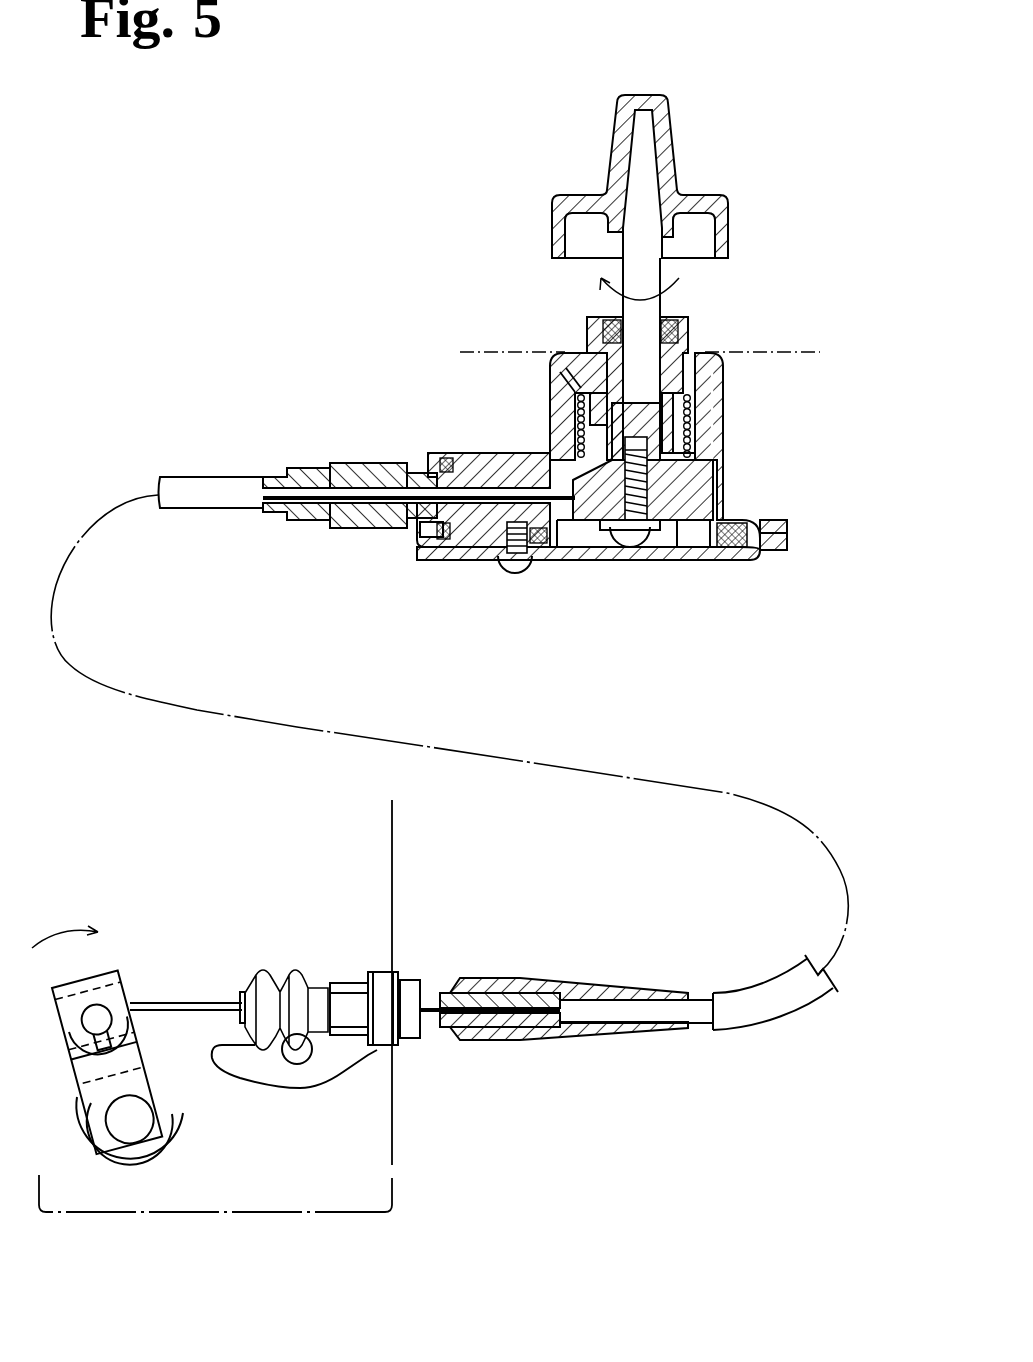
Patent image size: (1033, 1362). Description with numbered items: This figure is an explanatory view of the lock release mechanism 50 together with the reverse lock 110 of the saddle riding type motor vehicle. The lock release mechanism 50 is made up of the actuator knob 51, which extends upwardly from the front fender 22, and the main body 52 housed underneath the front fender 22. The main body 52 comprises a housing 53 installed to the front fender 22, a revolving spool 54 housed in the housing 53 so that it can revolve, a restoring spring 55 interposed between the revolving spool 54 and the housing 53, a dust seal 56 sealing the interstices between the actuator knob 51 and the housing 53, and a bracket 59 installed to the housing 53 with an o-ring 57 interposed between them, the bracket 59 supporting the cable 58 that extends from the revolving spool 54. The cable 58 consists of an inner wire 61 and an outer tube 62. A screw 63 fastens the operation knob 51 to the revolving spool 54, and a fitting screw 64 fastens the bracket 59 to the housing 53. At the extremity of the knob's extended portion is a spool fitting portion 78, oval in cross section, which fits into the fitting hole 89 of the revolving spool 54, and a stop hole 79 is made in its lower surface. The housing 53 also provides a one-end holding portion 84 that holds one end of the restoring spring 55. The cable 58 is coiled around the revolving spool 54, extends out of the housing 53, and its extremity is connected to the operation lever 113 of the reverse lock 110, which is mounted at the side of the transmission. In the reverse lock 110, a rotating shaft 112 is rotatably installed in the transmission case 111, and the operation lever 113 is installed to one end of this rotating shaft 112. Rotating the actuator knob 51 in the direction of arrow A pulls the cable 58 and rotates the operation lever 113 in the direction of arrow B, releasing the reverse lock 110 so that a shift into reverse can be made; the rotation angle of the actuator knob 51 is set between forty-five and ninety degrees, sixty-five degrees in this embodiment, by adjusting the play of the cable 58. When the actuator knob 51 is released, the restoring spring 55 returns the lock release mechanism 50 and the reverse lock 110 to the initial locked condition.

The front fender 22 is at (786, 347).
The lock release mechanism 50 is at (389, 139).
The actuator knob 51 is at (743, 180).
The main body 52 is at (486, 402).
The housing 53 is at (703, 345).
The revolving spool 54 is at (717, 495).
The restoring spring 55 is at (702, 420).
The dust seal 56 is at (606, 330).
The o-ring 57 is at (743, 523).
The cable 58 is at (266, 457).
The bracket 59 is at (694, 576).
The inner wire 61 is at (303, 480).
The outer tube 62 is at (215, 478).
The screw 63 is at (632, 538).
The fitting screw 64 is at (512, 568).
The spool fitting portion 78 is at (668, 548).
The stop hole 79 is at (641, 432).
The one-end holding portion 84 is at (565, 358).
The fitting hole 89 is at (607, 520).
The reverse lock 110 is at (138, 810).
The transmission case 111 is at (395, 888).
The rotating shaft 112 is at (130, 1135).
The operation lever 113 is at (110, 965).